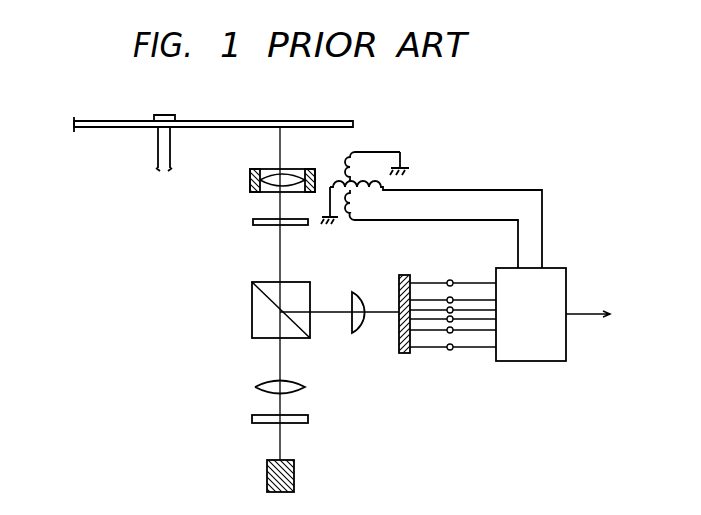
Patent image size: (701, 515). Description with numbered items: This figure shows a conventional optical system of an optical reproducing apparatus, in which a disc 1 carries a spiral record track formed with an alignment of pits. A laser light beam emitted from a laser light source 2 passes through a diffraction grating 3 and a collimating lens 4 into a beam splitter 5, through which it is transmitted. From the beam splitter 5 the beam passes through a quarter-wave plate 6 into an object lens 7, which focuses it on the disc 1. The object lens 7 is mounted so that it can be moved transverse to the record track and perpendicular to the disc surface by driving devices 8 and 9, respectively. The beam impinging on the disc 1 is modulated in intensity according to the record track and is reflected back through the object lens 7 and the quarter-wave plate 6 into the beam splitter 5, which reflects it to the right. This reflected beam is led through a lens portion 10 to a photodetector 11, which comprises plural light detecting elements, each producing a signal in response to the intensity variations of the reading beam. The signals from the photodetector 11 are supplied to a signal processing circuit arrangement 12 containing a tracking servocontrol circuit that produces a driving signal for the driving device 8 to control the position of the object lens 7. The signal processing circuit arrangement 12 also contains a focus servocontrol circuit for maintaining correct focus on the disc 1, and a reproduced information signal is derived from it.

The disc 1 is at (206, 120).
The laser light source 2 is at (265, 475).
The diffraction grating 3 is at (250, 419).
The collimating lens 4 is at (254, 387).
The beam splitter 5 is at (251, 311).
The quarter-wave plate 6 is at (251, 222).
The object lens 7 is at (248, 180).
The driving device 8 is at (334, 182).
The driving device 9 is at (353, 199).
The lens portion 10 is at (360, 336).
The photodetector 11 is at (407, 357).
The signal processing circuit arrangement 12 is at (541, 362).